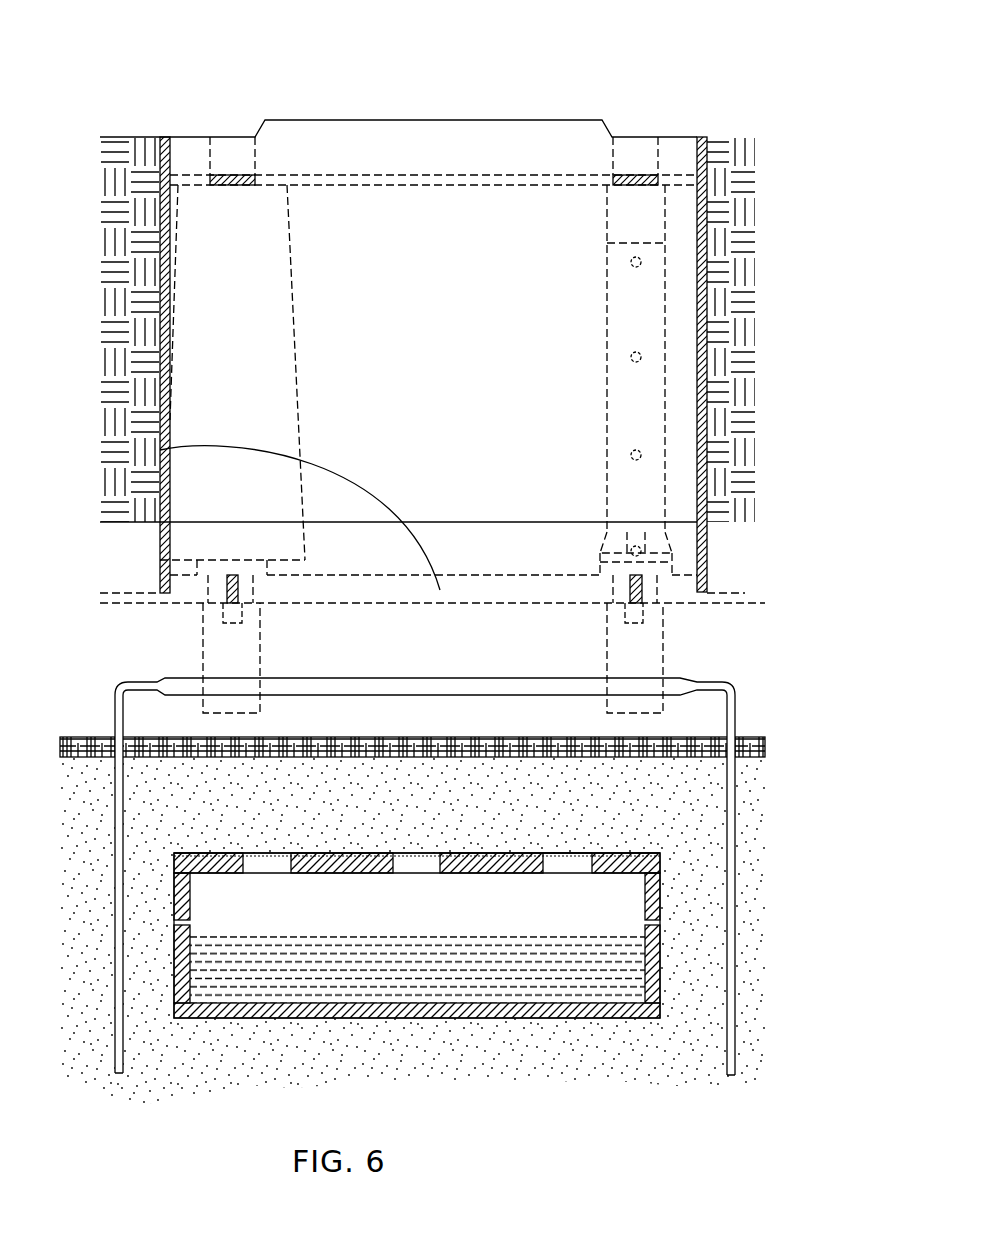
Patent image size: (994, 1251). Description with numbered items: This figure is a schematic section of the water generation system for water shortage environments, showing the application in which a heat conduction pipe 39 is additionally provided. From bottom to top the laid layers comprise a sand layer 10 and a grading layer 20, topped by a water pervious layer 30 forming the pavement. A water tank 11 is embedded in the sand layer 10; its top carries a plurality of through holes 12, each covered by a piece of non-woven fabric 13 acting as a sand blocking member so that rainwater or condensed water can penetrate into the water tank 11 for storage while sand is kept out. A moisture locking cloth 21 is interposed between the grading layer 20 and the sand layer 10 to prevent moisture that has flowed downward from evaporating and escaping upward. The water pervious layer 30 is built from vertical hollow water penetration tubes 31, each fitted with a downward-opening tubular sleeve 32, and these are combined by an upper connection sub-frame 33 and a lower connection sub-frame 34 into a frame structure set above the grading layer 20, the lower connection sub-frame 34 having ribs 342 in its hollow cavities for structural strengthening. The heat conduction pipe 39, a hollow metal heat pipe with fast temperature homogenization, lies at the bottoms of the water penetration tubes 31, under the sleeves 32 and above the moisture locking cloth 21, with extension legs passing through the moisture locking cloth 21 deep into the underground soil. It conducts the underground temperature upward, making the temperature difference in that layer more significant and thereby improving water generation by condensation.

The sand layer 10 is at (622, 800).
The water tank 11 is at (650, 940).
The through holes 12 is at (418, 867).
The non-woven fabric 13 is at (562, 855).
The grading layer 20 is at (684, 656).
The moisture locking cloth 21 is at (672, 747).
The water pervious layer 30 is at (694, 125).
The water penetration tubes 31 is at (667, 457).
The tubular sleeve 32 is at (167, 400).
The upper connection sub-frame 33 is at (642, 173).
The lower connection sub-frame 34 is at (643, 585).
The heat conduction pipe 39 is at (460, 683).
The ribs 342 is at (160, 450).